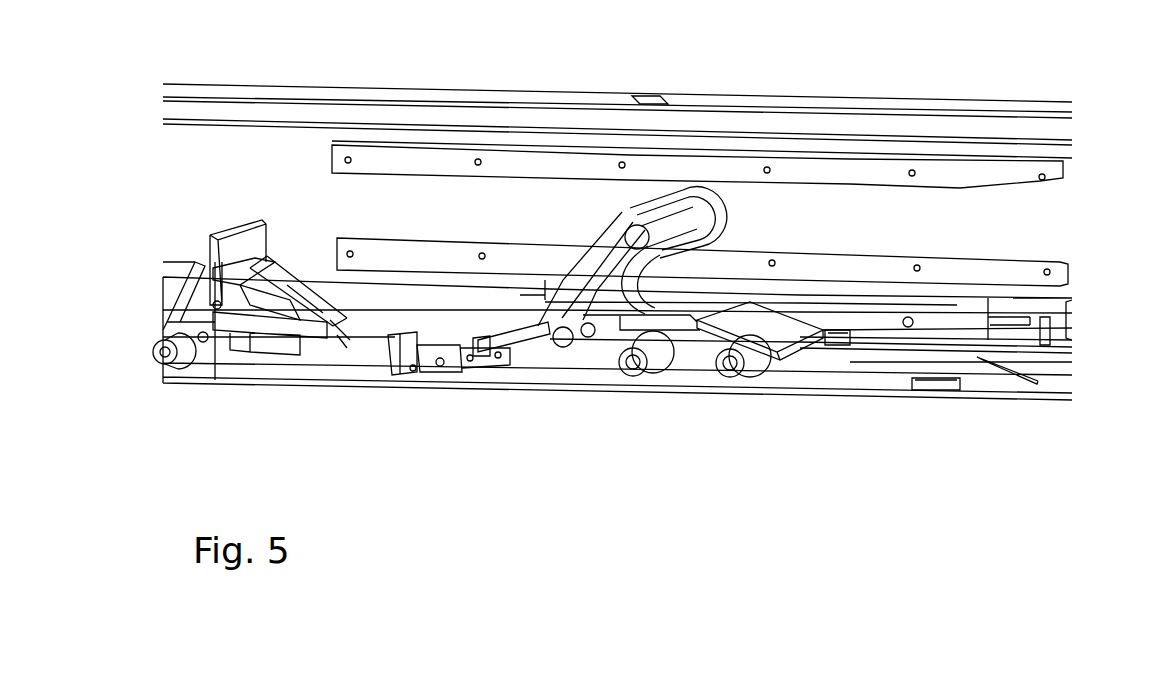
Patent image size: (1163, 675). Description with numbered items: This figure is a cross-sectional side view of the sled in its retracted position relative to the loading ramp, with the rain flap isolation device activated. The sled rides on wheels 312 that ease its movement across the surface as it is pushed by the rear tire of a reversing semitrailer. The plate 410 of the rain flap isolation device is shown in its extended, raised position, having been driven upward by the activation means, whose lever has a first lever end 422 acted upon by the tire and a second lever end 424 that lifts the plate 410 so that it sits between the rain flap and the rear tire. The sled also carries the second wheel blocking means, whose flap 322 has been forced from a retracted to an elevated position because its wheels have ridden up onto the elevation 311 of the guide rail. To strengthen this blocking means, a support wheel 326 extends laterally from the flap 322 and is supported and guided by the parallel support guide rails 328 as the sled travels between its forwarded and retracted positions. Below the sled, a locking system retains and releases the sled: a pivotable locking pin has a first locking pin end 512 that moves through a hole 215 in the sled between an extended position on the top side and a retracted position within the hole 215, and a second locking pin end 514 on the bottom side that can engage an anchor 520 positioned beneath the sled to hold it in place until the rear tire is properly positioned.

The hole 215 is at (307, 347).
The elevation 311 is at (993, 367).
The wheel 312 is at (175, 360).
The flap 322 is at (583, 318).
The support wheel 326 is at (714, 193).
The support guide rail 328 is at (848, 180).
The plate 410 is at (217, 252).
The first lever end 422 is at (223, 298).
The second lever end 424 is at (342, 340).
The first locking pin end 512 is at (408, 352).
The second locking pin end 514 is at (532, 353).
The anchor 520 is at (933, 392).